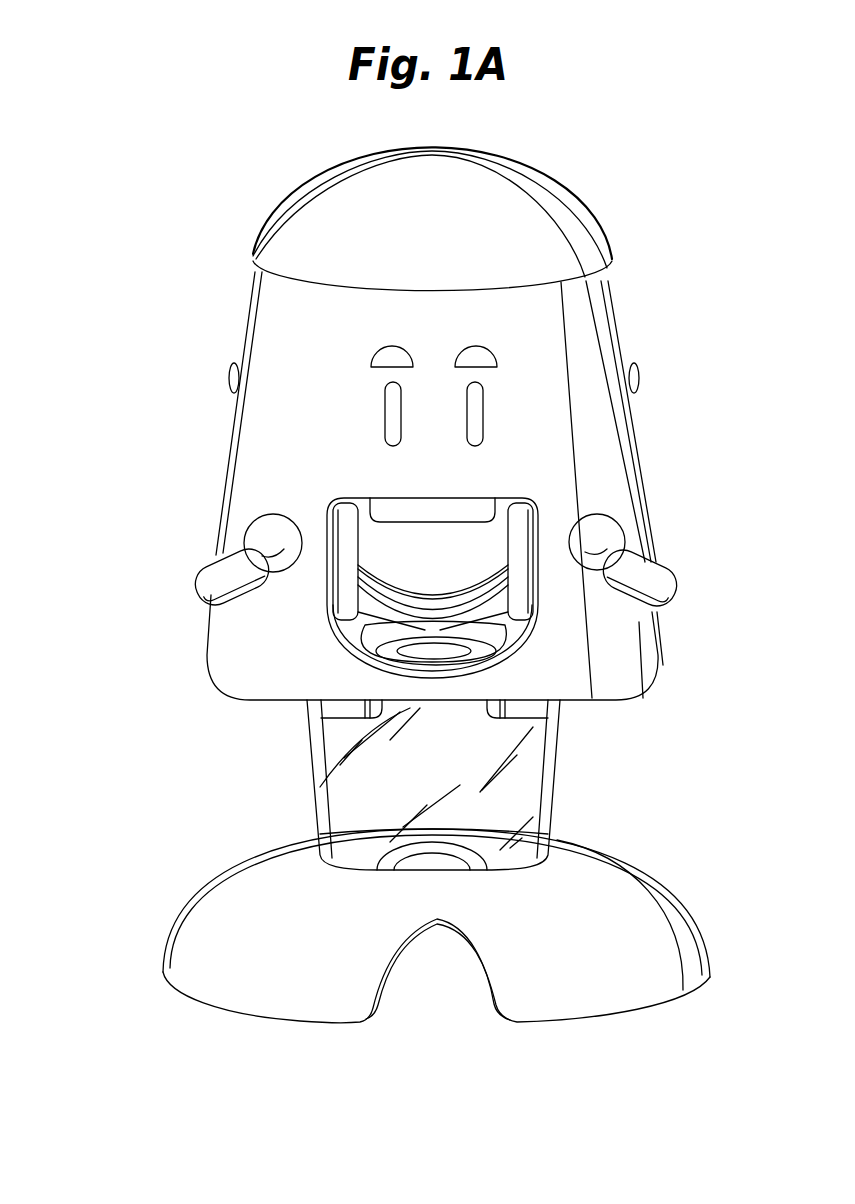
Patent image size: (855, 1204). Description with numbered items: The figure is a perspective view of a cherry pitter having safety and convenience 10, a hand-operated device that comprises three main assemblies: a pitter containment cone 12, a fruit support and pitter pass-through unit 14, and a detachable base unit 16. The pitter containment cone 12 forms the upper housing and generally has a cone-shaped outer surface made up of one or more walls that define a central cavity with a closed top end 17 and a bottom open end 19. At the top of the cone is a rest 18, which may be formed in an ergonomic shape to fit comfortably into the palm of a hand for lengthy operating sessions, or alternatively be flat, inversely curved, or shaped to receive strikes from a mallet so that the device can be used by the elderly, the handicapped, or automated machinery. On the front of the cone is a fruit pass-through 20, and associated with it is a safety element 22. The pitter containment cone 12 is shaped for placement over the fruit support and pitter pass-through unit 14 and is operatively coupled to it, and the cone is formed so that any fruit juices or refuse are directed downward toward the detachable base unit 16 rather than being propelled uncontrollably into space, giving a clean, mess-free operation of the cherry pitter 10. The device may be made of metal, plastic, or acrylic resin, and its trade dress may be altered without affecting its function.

The cherry pitter having safety and convenience 10 is at (175, 179).
The pitter containment cone 12 is at (603, 228).
The fruit support and pitter pass-through unit 14 is at (505, 650).
The detachable base unit 16 is at (598, 847).
The closed top end 17 is at (495, 152).
The rest 18 is at (310, 180).
The bottom open end 19 is at (372, 752).
The fruit pass-through 20 is at (540, 523).
The safety element 22 is at (480, 506).